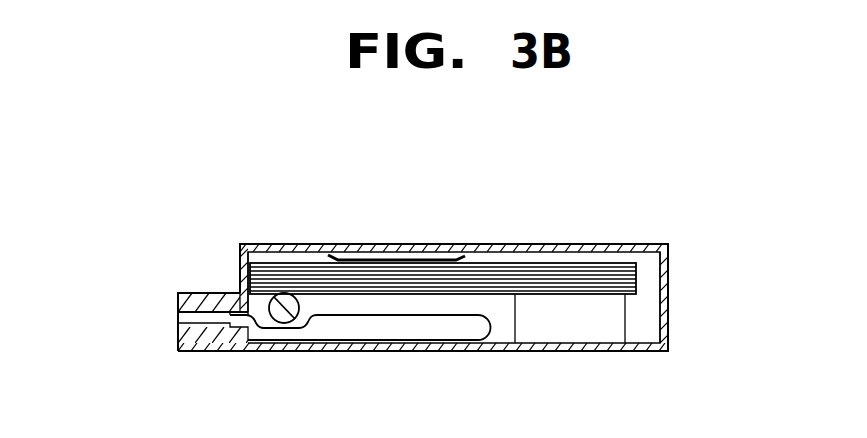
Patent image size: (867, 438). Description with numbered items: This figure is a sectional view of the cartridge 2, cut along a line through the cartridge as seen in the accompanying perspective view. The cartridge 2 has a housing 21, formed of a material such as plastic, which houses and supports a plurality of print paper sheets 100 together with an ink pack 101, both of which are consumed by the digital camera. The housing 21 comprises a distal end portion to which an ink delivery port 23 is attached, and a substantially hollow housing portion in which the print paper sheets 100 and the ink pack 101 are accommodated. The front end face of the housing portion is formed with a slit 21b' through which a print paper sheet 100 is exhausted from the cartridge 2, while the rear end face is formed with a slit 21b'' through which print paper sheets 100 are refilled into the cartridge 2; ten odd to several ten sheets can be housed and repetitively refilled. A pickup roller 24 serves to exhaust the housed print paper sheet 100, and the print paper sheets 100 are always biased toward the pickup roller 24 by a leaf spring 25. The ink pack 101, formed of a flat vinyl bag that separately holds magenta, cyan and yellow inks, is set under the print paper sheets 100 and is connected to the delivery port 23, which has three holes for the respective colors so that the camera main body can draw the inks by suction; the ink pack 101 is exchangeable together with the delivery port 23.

The cartridge 2 is at (647, 208).
The housing 21 is at (642, 352).
The slit 21b' is at (209, 230).
The slit 21b'' is at (727, 297).
The ink delivery port 23 is at (192, 293).
The pickup roller 24 is at (284, 322).
The leaf spring 25 is at (396, 257).
The print paper sheets 100 is at (568, 265).
The ink pack 101 is at (394, 316).